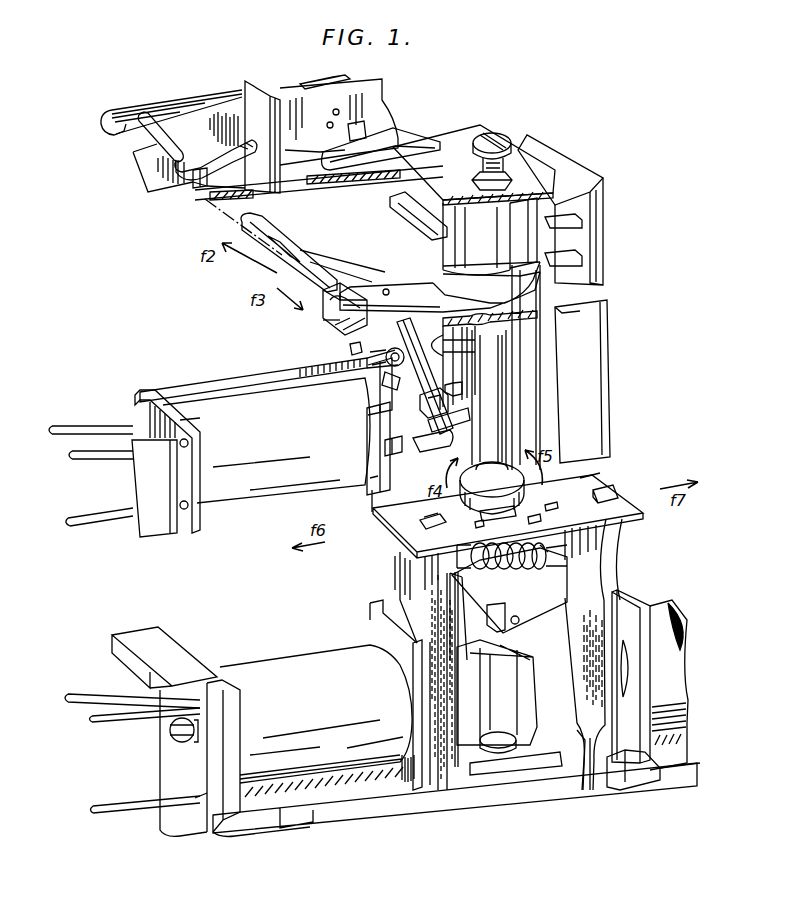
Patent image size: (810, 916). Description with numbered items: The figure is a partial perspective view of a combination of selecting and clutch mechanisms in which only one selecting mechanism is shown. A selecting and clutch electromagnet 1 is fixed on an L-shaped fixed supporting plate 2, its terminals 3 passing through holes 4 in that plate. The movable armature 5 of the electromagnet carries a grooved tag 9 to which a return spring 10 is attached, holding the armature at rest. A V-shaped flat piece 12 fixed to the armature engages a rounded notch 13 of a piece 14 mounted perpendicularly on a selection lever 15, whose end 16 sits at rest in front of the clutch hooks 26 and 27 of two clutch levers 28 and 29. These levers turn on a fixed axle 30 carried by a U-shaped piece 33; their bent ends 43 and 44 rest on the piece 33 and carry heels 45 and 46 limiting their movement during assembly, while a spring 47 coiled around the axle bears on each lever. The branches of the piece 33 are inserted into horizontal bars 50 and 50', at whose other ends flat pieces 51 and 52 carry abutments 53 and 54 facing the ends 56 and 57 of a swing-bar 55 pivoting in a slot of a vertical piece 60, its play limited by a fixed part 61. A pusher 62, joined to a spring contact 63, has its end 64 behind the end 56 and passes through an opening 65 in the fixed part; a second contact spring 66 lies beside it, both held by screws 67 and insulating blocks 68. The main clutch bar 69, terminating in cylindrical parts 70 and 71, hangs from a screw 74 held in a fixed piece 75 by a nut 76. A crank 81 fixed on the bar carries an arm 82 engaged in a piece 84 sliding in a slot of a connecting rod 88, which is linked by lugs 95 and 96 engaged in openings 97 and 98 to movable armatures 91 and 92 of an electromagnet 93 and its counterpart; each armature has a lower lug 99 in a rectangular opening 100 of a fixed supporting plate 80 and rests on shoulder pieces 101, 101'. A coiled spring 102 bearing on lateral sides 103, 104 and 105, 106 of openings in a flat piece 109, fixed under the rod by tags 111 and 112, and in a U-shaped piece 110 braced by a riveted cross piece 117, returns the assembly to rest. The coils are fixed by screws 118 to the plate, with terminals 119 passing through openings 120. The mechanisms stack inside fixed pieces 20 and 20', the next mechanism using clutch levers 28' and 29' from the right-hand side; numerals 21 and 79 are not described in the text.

The selecting and clutch electromagnet 1 is at (270, 487).
The fixed supporting plate 2 is at (267, 387).
The terminals 3 is at (70, 520).
The holes 4 is at (137, 415).
The movable armature 5 is at (377, 480).
The grooved tag 9 is at (380, 463).
The return spring 10 is at (387, 450).
The V-shaped flat piece 12 is at (388, 363).
The notch 13 is at (390, 355).
The piece 14 is at (380, 398).
The selection lever 15 is at (370, 405).
The end of the selection lever 16 is at (449, 407).
The fixed piece 20 is at (425, 400).
The fixed piece 20' is at (596, 320).
The bolt 21 is at (351, 348).
The clutch hook 26 is at (464, 385).
The clutch hook 27 is at (462, 427).
The clutch lever 28 is at (466, 351).
The clutch lever 28' is at (570, 200).
The clutch lever 29 is at (433, 449).
The clutch lever 29' is at (526, 233).
The fixed axle 30 is at (386, 289).
The U-shaped piece 33 is at (340, 318).
The bent end of lever 28 43 is at (343, 295).
The bent end of lever 29 44 is at (343, 330).
The heel 45 is at (337, 297).
The heel 46 is at (323, 320).
The spring 47 is at (447, 305).
The horizontal bar 50 is at (313, 252).
The horizontal bar 50' is at (402, 216).
The flat piece 51 is at (215, 196).
The flat piece 52 is at (353, 173).
The abutment 53 is at (205, 188).
The abutment 54 is at (356, 136).
The swing-bar 55 is at (293, 150).
The end of swing-bar 56 is at (193, 181).
The end of swing-bar 57 is at (377, 138).
The vertical piece 60 is at (268, 110).
The fixed part 61 is at (358, 98).
The pusher 62 is at (170, 148).
The spring contact 63 is at (126, 128).
The end of pusher 64 is at (186, 166).
The opening 65 is at (135, 154).
The second contact spring 66 is at (110, 111).
The screw 67 is at (334, 116).
The insulating block 68 is at (330, 80).
The main clutch bar 69 is at (485, 240).
The cylindrical part 70 is at (443, 268).
The cylindrical part 71 is at (525, 390).
The screw 74 is at (493, 140).
The fixed piece 75 is at (458, 140).
The nut 76 is at (513, 180).
The cylinder end 79 is at (483, 732).
The fixed supporting plate 80 is at (503, 797).
The crank 81 is at (513, 470).
The arm of the crank 82 is at (497, 513).
The piece 84 is at (533, 512).
The connecting rod 88 is at (598, 488).
The movable armature 91 is at (407, 572).
The movable armature 92 is at (608, 581).
The electromagnet 93 is at (293, 670).
The lug 95 is at (427, 520).
The lug 96 is at (612, 495).
The opening 97 is at (420, 518).
The opening 98 is at (592, 475).
The lug 99 is at (600, 760).
The rectangular opening 100 is at (583, 737).
The shoulder piece 101 is at (570, 796).
The shoulder piece 101' is at (635, 676).
The coiled spring 102 is at (505, 600).
The lateral side 103 is at (550, 553).
The lateral side 104 is at (527, 562).
The lateral side 105 is at (448, 577).
The lateral side 106 is at (485, 566).
The flat piece 109 is at (540, 547).
The U-shaped piece 110 is at (497, 630).
The tag 111 is at (474, 521).
The tag 112 is at (540, 510).
The riveted cross piece 117 is at (487, 611).
The screw 118 is at (170, 733).
The terminals 119 is at (95, 807).
The opening 120 is at (197, 803).